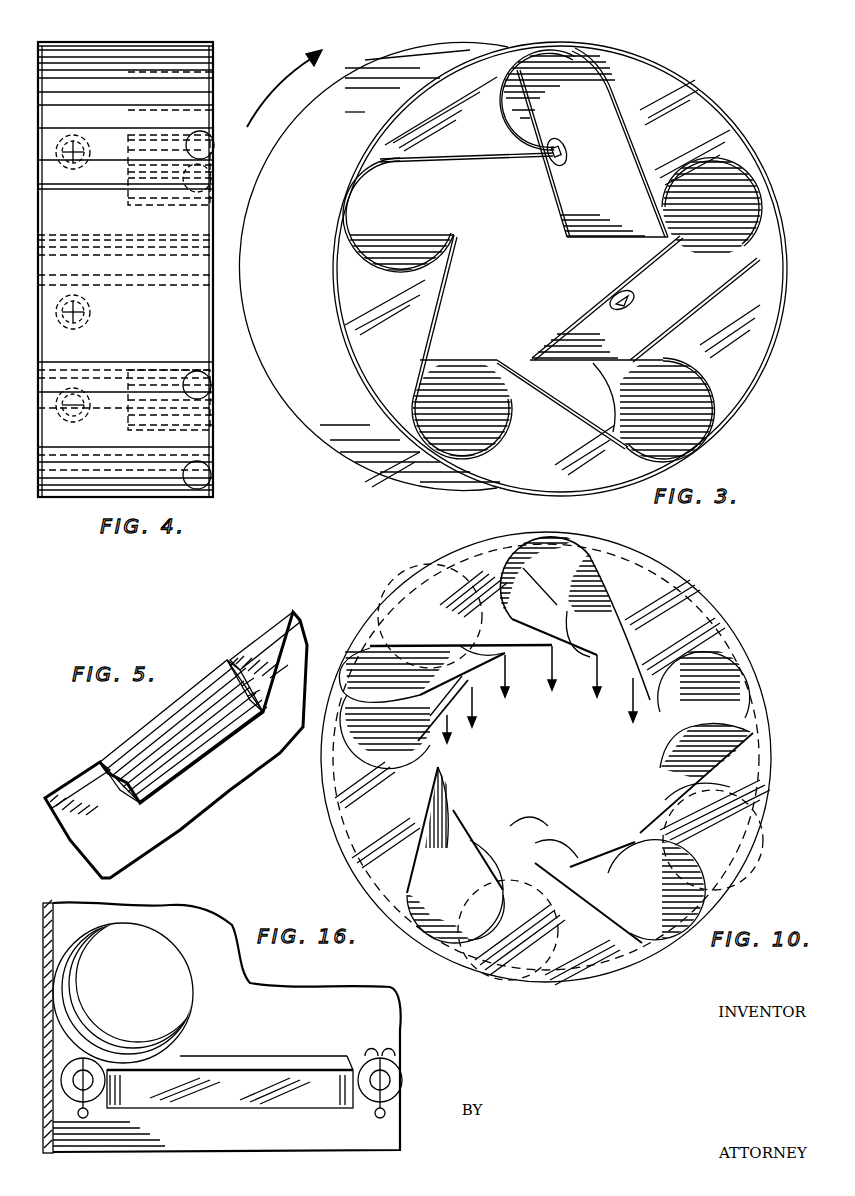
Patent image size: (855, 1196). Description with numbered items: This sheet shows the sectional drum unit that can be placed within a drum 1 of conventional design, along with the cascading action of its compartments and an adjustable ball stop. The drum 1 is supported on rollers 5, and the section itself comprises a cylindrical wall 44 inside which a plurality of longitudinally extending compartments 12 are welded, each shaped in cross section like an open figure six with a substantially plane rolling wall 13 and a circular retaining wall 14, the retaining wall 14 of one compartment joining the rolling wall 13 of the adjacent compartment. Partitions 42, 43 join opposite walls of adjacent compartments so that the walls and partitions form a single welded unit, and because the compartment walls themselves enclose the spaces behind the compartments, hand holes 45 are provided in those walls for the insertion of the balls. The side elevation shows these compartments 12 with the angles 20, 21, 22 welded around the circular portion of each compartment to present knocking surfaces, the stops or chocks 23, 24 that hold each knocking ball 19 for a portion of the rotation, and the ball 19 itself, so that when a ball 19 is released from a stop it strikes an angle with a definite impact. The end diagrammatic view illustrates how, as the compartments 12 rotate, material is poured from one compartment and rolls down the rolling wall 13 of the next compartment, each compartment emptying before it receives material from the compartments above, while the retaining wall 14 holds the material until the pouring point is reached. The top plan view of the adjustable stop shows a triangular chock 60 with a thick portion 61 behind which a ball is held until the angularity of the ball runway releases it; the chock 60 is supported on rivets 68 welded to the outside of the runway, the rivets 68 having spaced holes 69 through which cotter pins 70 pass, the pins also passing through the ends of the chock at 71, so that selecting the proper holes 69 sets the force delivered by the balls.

In FIG. 16, the drum 1 is at (178, 915).
In FIG. 3, the rollers 5 is at (652, 283).
In FIG. 4, the compartments 12 is at (113, 272).
In FIG. 3, the compartments 12 is at (365, 172).
In FIG. 10, the compartments 12 is at (638, 925).
In FIG. 4, the rolling wall 13 is at (100, 158).
In FIG. 3, the rolling wall 13 is at (478, 160).
In FIG. 10, the rolling wall 13 is at (618, 618).
In FIG. 5, the rolling wall 13 is at (73, 774).
In FIG. 3, the retaining wall 14 is at (438, 246).
In FIG. 10, the retaining wall 14 is at (537, 608).
In FIG. 4, the knocking ball 19 is at (212, 148).
In FIG. 16, the knocking ball 19 is at (173, 968).
In FIG. 4, the angle 20 is at (130, 172).
In FIG. 4, the angle 21 is at (160, 72).
In FIG. 4, the angle 22 is at (182, 135).
In FIG. 4, the stop 23 is at (152, 142).
In FIG. 4, the stop 24 is at (195, 290).
In FIG. 4, the partition 42 is at (213, 353).
In FIG. 3, the partition 42 is at (560, 269).
In FIG. 4, the partition 43 is at (40, 494).
In FIG. 3, the partition 43 is at (352, 75).
In FIG. 5, the partition 43 is at (230, 790).
In FIG. 4, the cylindrical wall 44 is at (80, 43).
In FIG. 3, the cylindrical wall 44 is at (373, 267).
In FIG. 4, the hand hole 45 is at (90, 415).
In FIG. 3, the hand hole 45 is at (612, 298).
In FIG. 5, the hand hole 45 is at (215, 660).
In FIG. 16, the triangular chock 60 is at (248, 1095).
In FIG. 16, the thick portion 61 is at (366, 1060).
In FIG. 16, the rivets 68 is at (95, 1110).
In FIG. 16, the holes 69 is at (100, 1080).
In FIG. 16, the cotter pins 70 is at (386, 1116).
In FIG. 16, the ends of the chocks 71 is at (396, 1030).